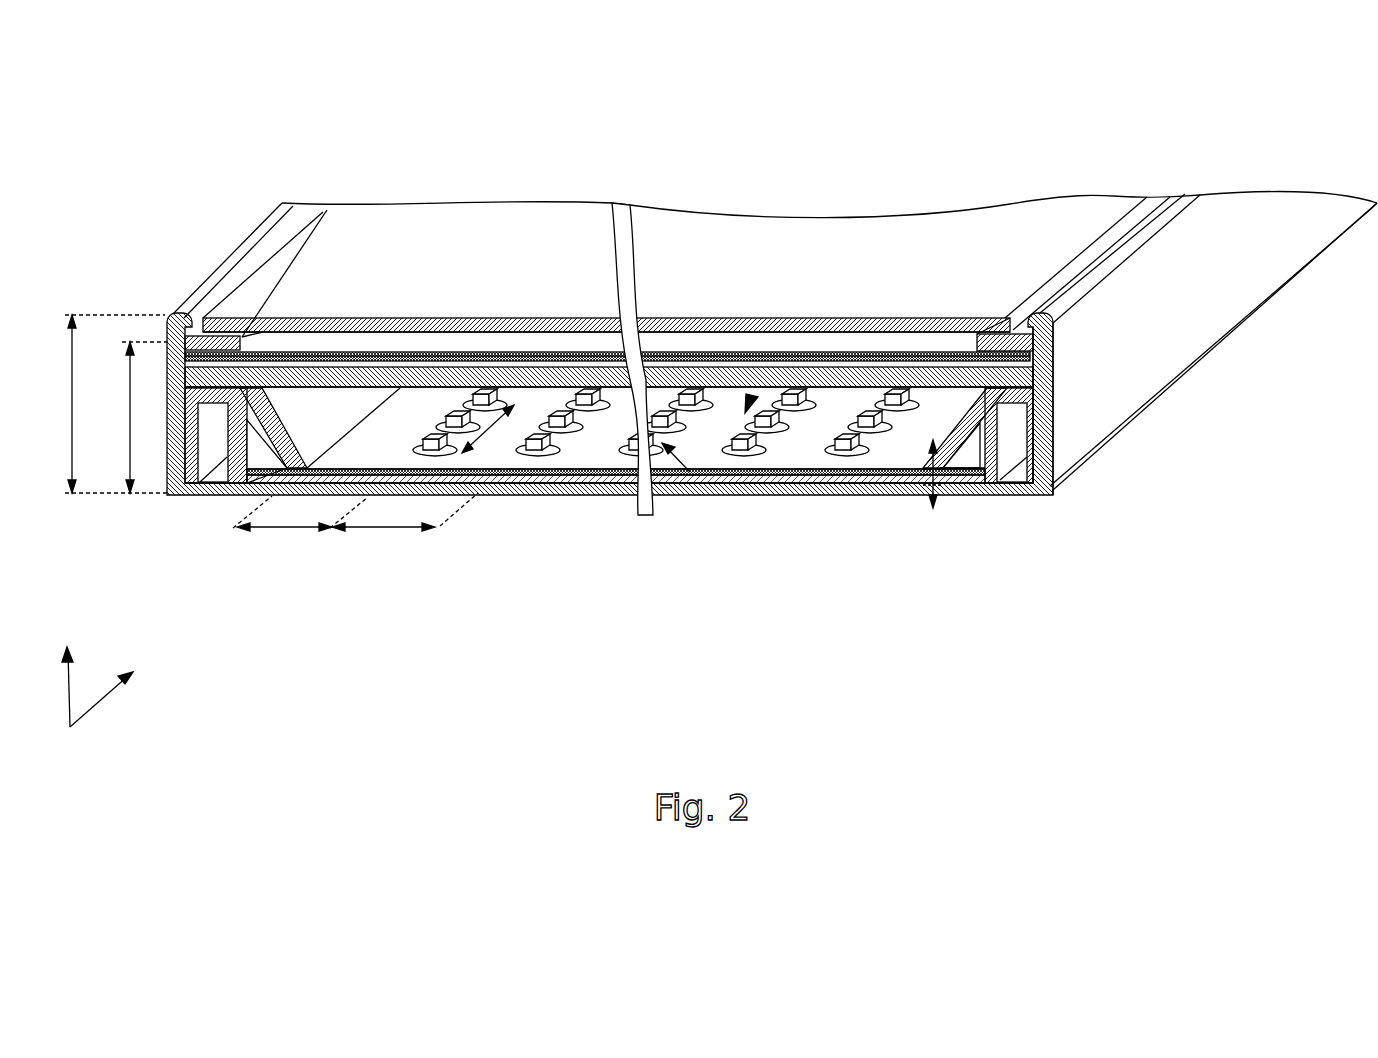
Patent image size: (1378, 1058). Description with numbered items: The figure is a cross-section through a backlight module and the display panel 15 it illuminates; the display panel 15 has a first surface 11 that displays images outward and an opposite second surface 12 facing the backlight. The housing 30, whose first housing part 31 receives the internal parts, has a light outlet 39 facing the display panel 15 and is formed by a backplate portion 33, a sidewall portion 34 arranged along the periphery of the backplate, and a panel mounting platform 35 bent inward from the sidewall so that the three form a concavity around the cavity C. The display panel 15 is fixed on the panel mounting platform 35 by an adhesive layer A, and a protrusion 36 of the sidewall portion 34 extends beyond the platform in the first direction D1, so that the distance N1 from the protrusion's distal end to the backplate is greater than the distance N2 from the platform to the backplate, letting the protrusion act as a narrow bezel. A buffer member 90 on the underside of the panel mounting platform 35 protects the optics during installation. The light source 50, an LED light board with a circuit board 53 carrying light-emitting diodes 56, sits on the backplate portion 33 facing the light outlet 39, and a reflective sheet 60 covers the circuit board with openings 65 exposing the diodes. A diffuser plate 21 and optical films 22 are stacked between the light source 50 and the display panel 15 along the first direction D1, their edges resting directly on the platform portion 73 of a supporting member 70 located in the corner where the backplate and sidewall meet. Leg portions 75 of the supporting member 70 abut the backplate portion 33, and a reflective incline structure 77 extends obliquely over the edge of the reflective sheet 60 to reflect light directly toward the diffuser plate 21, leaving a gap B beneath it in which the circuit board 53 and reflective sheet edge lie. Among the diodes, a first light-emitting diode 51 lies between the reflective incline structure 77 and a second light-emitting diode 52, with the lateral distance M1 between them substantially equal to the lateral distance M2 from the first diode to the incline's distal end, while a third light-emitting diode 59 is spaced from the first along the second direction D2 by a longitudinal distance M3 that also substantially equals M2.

The first surface 11 is at (780, 237).
The second surface 12 is at (707, 393).
The display panel 15 is at (660, 267).
The diffuser plate 21 is at (795, 395).
The optical films 22 is at (842, 390).
The housing 30 is at (772, 343).
The first housing part 31 is at (1203, 324).
The backplate portion 33 is at (889, 495).
The sidewall portion 34 is at (1050, 363).
The panel mounting platform 35 is at (977, 343).
The protrusion 36 is at (1043, 322).
The light outlet 39 is at (589, 326).
The light source 50 is at (616, 539).
The first light-emitting diode 51 is at (430, 433).
The second light-emitting diode 52 is at (532, 497).
The circuit board 53 is at (640, 562).
The light-emitting diodes 56 is at (630, 497).
The third light-emitting diode 59 is at (457, 407).
The reflective sheet 60 is at (533, 417).
The openings 65 is at (690, 472).
The supporting member 70 is at (683, 569).
The platform portion 73 is at (1010, 410).
The leg portions 75 is at (990, 497).
The reflective incline structure 77 is at (960, 463).
The buffer member 90 is at (1050, 390).
The adhesive layer A is at (992, 335).
The gap B is at (936, 497).
The cavity C is at (752, 395).
The first direction D1 is at (62, 669).
The second direction D2 is at (120, 687).
The lateral linear distance M1 is at (404, 527).
The lateral linear distance M2 is at (282, 528).
The longitudinal linear distance M3 is at (487, 497).
The distance N1 is at (100, 404).
The distance N2 is at (131, 417).